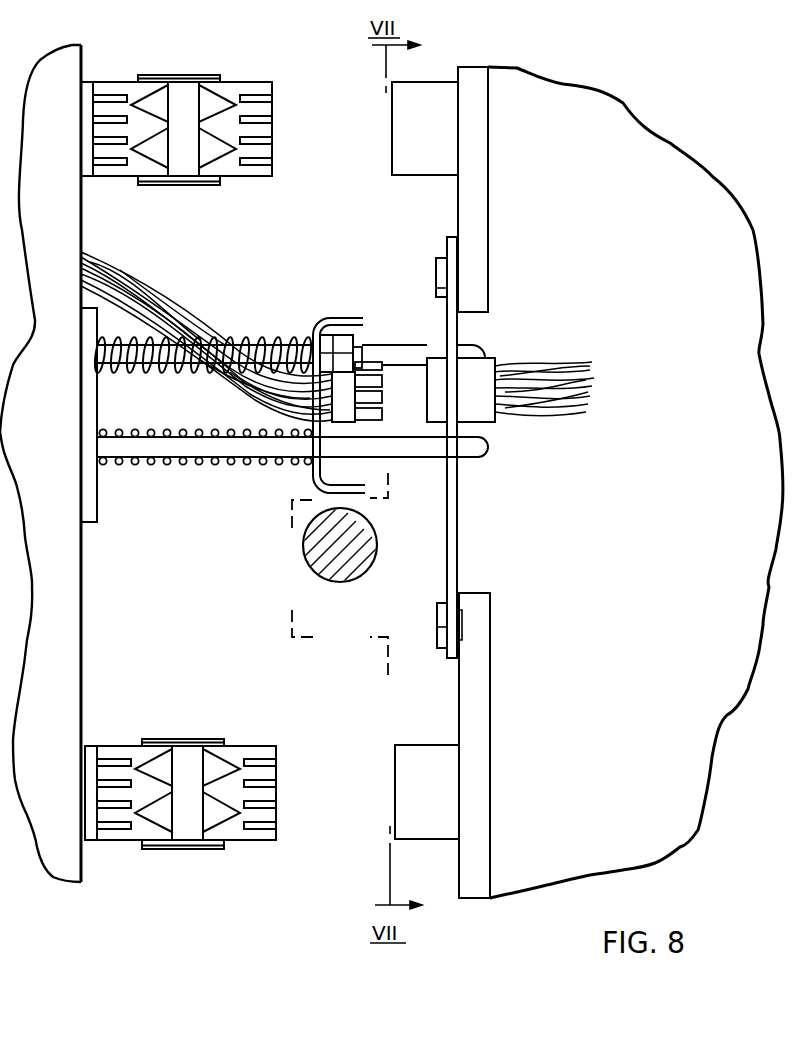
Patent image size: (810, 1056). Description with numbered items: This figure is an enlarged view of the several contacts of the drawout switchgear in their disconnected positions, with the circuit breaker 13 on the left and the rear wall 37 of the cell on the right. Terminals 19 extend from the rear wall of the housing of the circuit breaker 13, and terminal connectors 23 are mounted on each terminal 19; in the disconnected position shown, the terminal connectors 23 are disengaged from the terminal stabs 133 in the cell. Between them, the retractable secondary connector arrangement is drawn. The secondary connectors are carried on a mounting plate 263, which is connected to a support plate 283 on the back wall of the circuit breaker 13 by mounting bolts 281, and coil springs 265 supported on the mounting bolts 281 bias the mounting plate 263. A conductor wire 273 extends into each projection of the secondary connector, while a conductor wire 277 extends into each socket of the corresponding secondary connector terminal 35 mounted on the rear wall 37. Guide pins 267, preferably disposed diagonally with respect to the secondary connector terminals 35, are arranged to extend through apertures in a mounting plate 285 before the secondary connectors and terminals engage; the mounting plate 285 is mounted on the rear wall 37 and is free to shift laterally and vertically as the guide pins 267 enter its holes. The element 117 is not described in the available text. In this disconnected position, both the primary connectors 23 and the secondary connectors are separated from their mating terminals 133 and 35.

The circuit breaker 13 is at (72, 200).
The terminal 19 is at (88, 93).
The terminal connector 23 is at (265, 66).
The secondary connector terminal 35 is at (440, 370).
The rear wall 37 is at (483, 675).
The guide rod 117 is at (315, 563).
The terminal stab 133 is at (405, 153).
The mounting plate 263 is at (308, 336).
The coil spring 265 is at (257, 334).
The guide pin 267 is at (410, 348).
The conductor wire 273 is at (157, 296).
The conductor wire 277 is at (533, 377).
The mounting bolt 281 is at (217, 334).
The support plate 283 is at (93, 392).
The mounting plate 285 is at (452, 547).